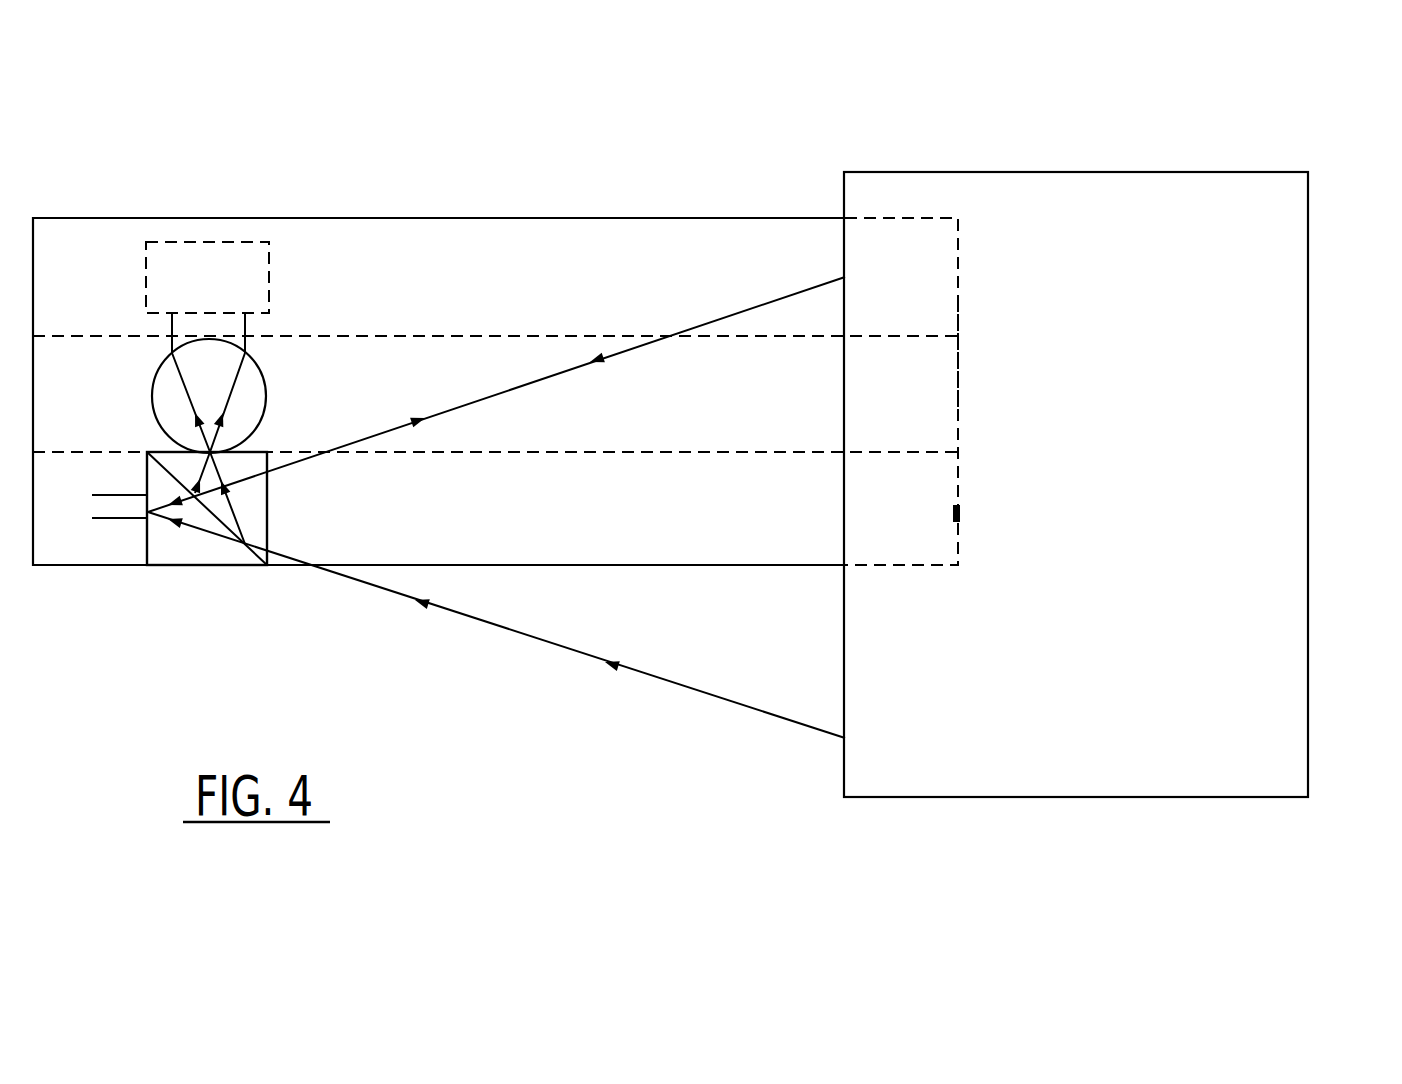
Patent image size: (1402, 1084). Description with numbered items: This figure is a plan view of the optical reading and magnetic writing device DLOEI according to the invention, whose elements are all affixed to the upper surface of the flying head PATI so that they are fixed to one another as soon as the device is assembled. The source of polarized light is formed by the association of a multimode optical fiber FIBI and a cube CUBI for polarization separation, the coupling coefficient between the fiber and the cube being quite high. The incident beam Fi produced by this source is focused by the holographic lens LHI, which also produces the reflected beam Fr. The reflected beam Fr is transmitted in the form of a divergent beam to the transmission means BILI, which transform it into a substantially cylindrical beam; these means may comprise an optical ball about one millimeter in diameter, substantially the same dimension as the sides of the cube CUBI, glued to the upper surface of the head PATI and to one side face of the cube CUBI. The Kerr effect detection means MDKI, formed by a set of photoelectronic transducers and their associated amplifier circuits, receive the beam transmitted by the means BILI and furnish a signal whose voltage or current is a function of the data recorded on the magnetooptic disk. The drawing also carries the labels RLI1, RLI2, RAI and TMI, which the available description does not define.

The optical reading and magnetic writing device DLOEI is at (128, 155).
The Kerr effect detection means MDKI is at (270, 257).
The first reference line RLI1 is at (473, 258).
The second reference line RLI2 is at (675, 543).
The flying head PATI is at (652, 222).
The holographic lens LHI is at (1015, 275).
The reflecting surface edge RAI is at (958, 360).
The marker / reflector TMI is at (953, 513).
The transmission means BILI is at (268, 390).
The cube for polarization separation CUBI is at (222, 560).
The optical fiber of the multimode type FIBI is at (100, 520).
The incident beam Fi is at (496, 394).
The reflected beam Fr is at (496, 545).